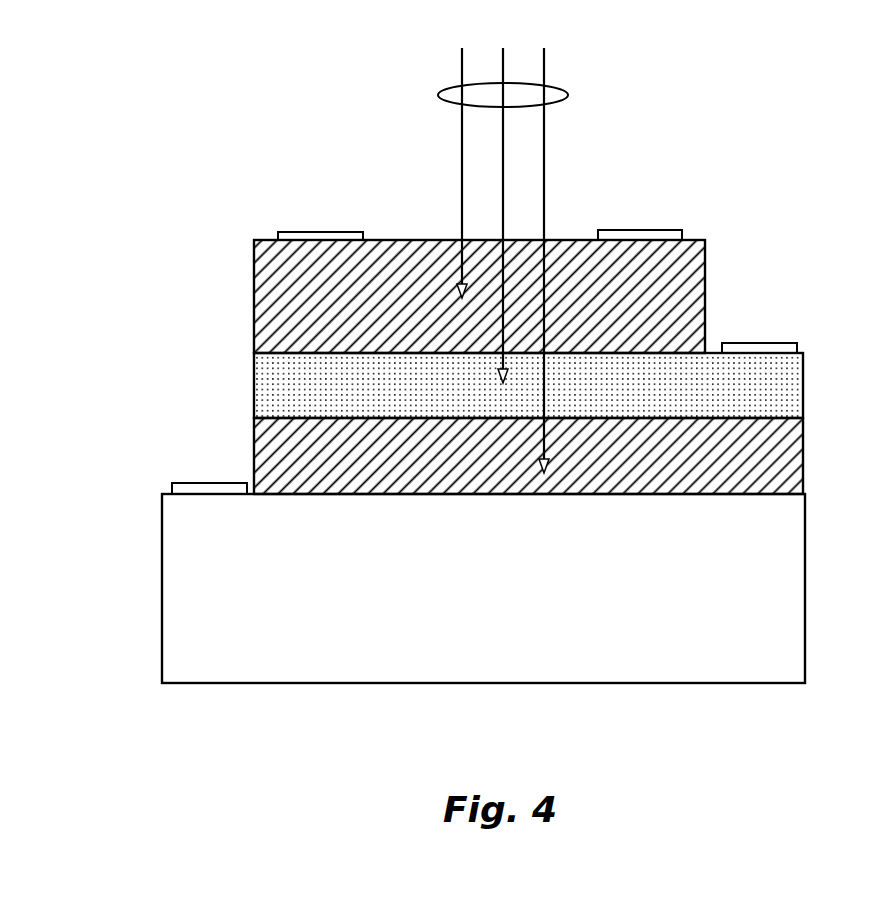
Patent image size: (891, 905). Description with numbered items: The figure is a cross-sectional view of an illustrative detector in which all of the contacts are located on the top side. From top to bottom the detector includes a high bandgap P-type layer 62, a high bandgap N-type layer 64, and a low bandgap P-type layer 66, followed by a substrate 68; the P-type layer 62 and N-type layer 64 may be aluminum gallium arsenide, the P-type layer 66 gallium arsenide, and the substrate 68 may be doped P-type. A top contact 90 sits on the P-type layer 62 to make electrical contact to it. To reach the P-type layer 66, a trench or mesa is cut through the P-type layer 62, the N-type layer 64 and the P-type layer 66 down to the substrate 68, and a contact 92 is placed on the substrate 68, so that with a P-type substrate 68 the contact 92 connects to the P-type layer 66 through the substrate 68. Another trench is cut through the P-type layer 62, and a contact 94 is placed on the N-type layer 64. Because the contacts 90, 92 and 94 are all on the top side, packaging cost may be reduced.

The high bandgap P-type layer 62 is at (263, 297).
The high bandgap N-type layer 64 is at (258, 387).
The low bandgap P-type layer 66 is at (255, 462).
The substrate 68 is at (181, 641).
The top contact 90 is at (299, 232).
The contact 92 is at (175, 482).
The contact 94 is at (750, 343).